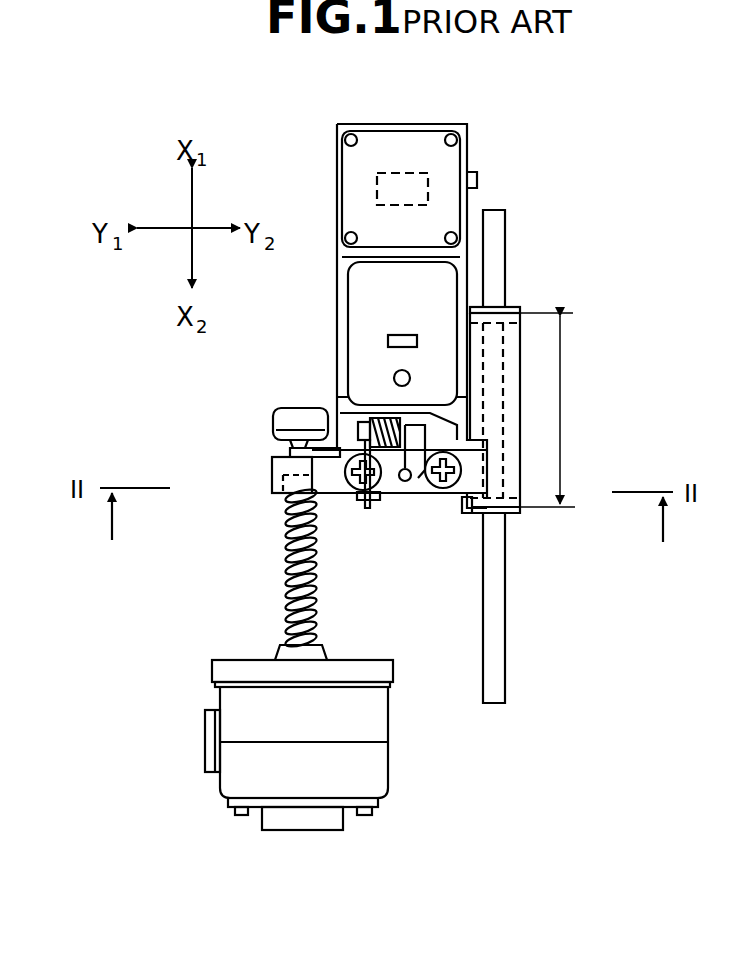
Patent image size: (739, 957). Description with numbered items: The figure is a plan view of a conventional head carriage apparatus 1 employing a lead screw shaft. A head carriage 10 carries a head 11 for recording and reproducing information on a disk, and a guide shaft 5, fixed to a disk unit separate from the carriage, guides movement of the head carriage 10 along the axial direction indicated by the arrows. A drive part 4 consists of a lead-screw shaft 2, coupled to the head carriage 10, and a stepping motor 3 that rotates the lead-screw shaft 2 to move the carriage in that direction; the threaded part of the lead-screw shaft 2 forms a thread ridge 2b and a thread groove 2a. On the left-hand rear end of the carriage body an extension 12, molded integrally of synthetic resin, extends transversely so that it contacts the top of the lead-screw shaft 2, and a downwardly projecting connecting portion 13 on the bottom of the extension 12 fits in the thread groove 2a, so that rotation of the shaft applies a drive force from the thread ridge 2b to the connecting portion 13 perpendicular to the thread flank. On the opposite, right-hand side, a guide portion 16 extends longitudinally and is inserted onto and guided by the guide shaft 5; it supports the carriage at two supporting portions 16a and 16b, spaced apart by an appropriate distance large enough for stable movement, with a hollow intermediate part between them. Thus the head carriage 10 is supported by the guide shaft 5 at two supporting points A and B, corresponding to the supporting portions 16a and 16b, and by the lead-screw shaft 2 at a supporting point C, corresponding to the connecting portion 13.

The head carriage apparatus 1 is at (587, 76).
The lead-screw shaft 2 is at (318, 596).
The thread groove 2a is at (316, 553).
The thread ridge 2b is at (318, 522).
The stepping motor 3 is at (377, 757).
The drive part 4 is at (282, 577).
The guide shaft 5 is at (505, 622).
The head carriage 10 is at (334, 338).
The head 11 is at (428, 174).
The extension 12 is at (272, 458).
The connecting portion 13 is at (272, 473).
The guide portion 16 is at (521, 360).
The supporting portion 16a is at (531, 312).
The supporting portion 16b is at (512, 494).
The supporting point A is at (497, 306).
The supporting point B is at (494, 516).
The supporting point C is at (272, 493).